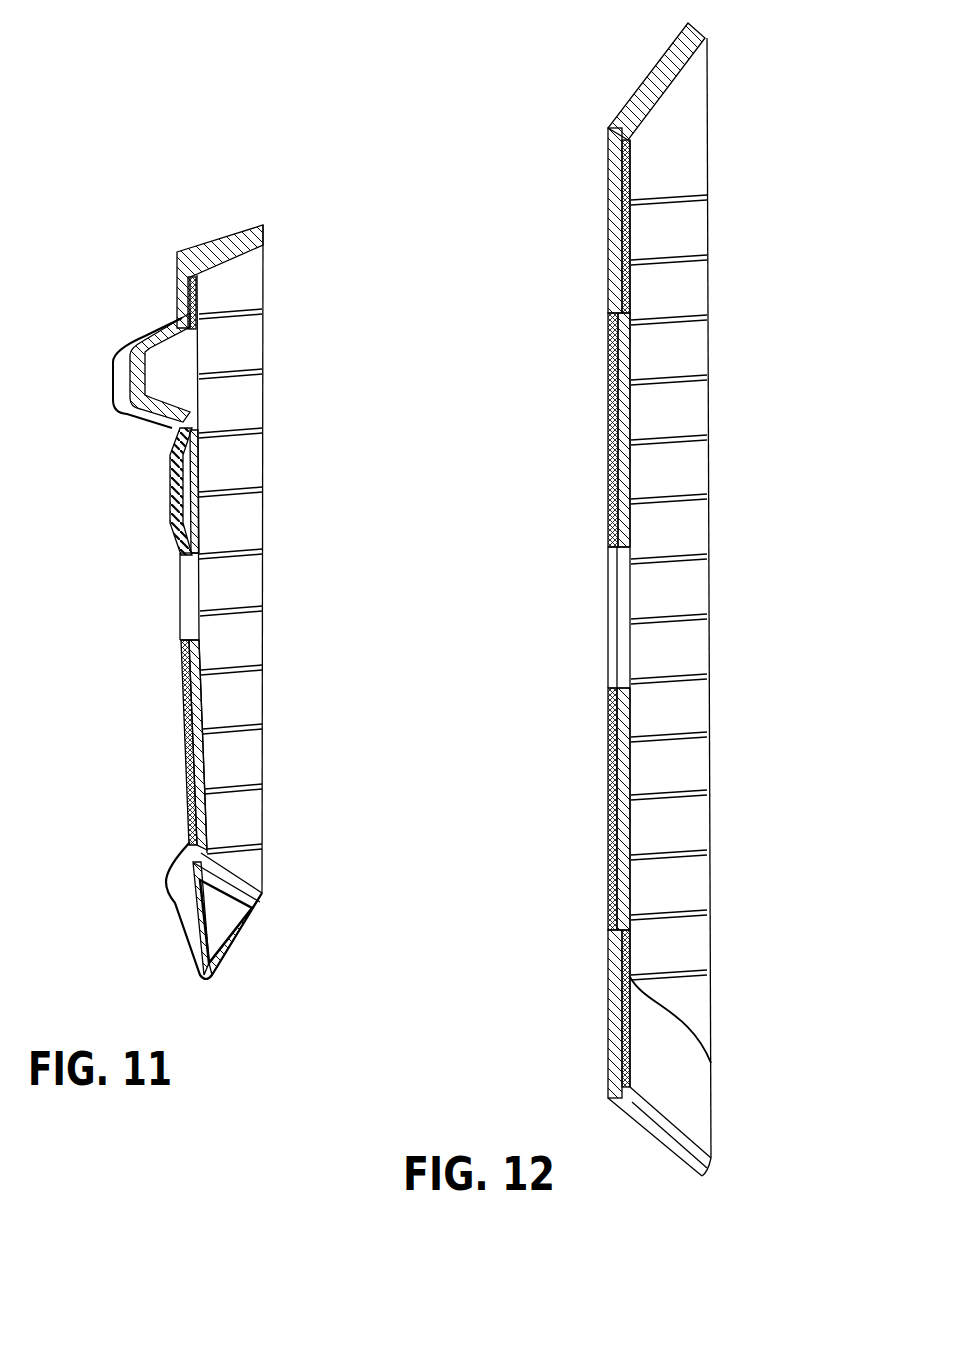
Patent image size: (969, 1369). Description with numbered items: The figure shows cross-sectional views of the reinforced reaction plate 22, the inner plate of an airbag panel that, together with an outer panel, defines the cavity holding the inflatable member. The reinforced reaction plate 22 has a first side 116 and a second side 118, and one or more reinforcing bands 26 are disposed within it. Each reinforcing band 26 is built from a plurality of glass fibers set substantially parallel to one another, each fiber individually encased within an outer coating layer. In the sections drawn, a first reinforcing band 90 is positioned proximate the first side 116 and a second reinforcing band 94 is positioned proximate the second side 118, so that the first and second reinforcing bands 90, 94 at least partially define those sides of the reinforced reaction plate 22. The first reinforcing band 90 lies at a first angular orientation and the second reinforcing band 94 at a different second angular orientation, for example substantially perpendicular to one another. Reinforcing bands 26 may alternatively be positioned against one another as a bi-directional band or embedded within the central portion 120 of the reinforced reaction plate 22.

In FIG. 11, the reinforced reaction plate 22 is at (228, 238).
In FIG. 12, the reinforced reaction plate 22 is at (648, 77).
In FIG. 11, the reinforcing band 26 is at (185, 752).
In FIG. 12, the reinforcing band 26 is at (608, 440).
In FIG. 11, the first reinforcing band 90 is at (172, 490).
In FIG. 12, the first reinforcing band 90 is at (608, 818).
In FIG. 11, the second reinforcing band 94 is at (198, 286).
In FIG. 12, the second reinforcing band 94 is at (630, 937).
In FIG. 11, the first side 116 is at (113, 367).
In FIG. 12, the first side 116 is at (608, 200).
In FIG. 11, the second side 118 is at (205, 760).
In FIG. 12, the second side 118 is at (632, 470).
In FIG. 11, the central portion 120 is at (199, 649).
In FIG. 12, the central portion 120 is at (622, 772).